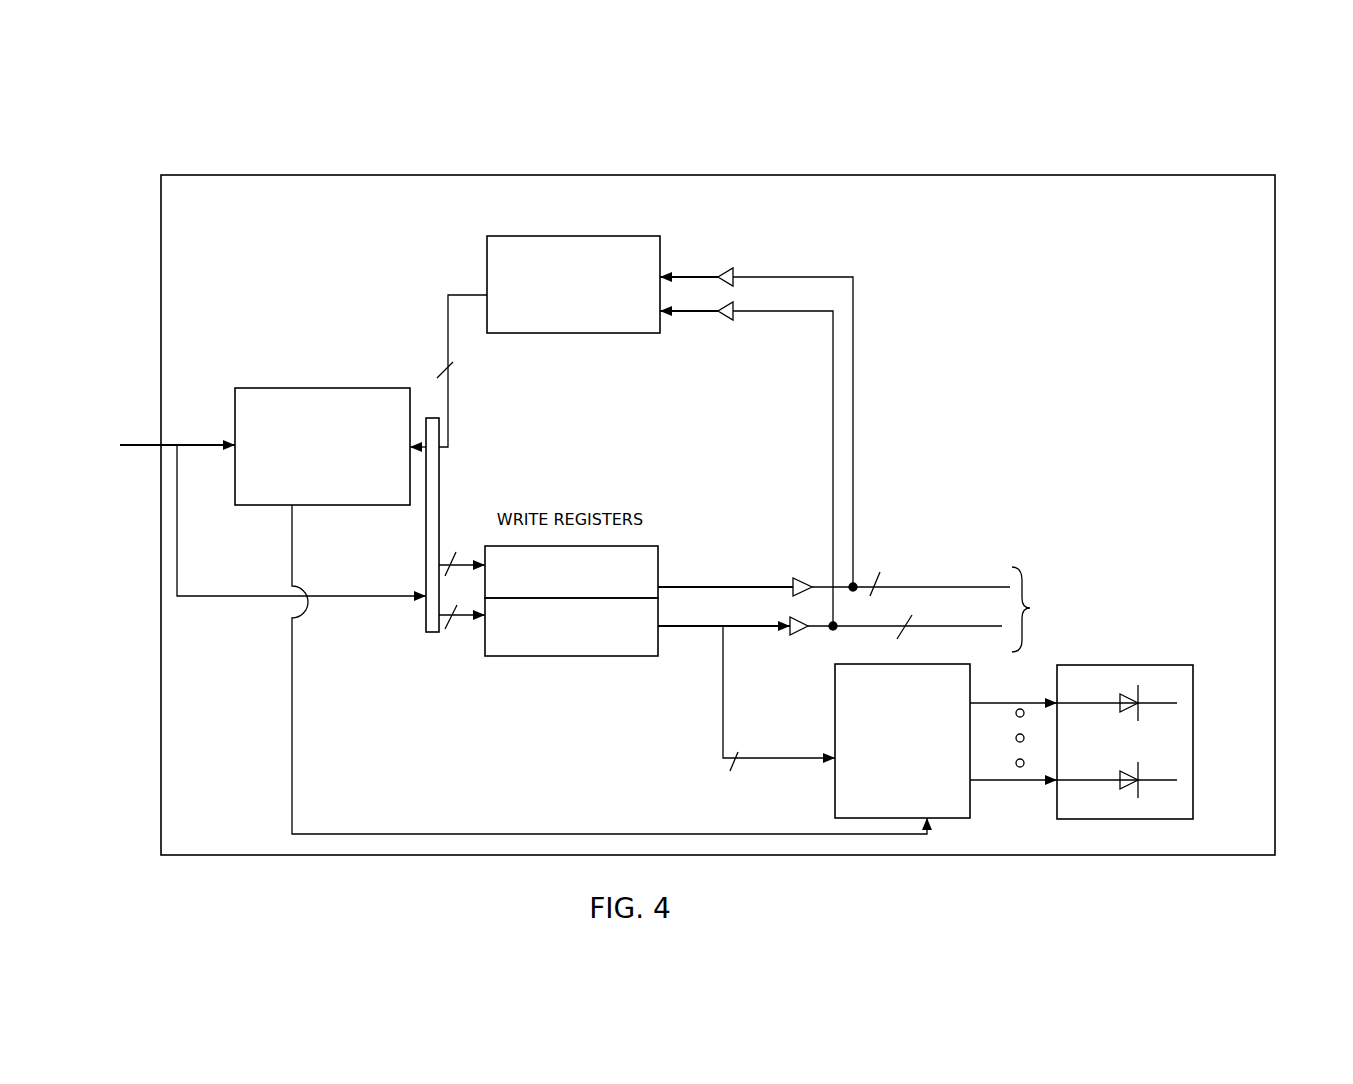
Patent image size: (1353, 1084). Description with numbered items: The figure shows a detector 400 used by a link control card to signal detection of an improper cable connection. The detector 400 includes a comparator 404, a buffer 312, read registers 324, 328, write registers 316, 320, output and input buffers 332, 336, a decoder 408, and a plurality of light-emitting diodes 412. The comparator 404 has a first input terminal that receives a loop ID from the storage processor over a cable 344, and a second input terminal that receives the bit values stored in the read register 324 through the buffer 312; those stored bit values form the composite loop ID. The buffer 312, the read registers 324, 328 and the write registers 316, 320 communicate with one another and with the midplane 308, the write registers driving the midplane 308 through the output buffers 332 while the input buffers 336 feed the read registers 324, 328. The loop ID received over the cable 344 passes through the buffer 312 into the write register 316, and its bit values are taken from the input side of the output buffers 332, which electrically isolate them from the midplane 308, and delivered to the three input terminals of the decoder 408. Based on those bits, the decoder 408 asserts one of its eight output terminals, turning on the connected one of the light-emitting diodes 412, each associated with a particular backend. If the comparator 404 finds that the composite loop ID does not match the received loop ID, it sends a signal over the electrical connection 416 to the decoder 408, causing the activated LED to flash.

The detector 400 is at (709, 100).
The cable 344 is at (140, 438).
The comparator 404 is at (333, 490).
The buffer 312 is at (427, 633).
The read register 324 is at (573, 284).
The read register 328 is at (573, 284).
The input buffer 336 is at (724, 266).
The write register 320 is at (571, 572).
The write register 316 is at (571, 627).
The write output buffer 332 is at (790, 572).
The midplane 308 is at (1109, 609).
The decoder 408 is at (945, 797).
The light-emitting diodes 412 is at (1195, 749).
The electrical connection 416 is at (568, 825).